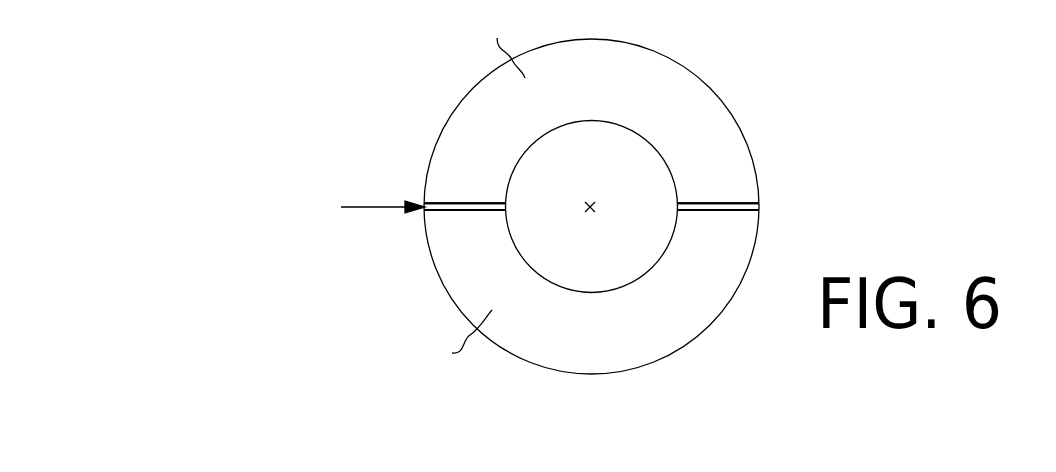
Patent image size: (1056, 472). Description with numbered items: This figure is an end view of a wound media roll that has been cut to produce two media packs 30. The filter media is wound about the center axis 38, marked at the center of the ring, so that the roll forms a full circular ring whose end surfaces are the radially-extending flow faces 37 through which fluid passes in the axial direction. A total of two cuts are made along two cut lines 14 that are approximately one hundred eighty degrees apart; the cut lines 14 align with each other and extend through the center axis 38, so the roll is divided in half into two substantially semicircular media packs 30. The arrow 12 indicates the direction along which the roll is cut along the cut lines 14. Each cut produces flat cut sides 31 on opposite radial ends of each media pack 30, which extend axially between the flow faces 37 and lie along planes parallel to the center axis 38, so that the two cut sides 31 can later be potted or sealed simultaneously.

The arrow 12 is at (372, 206).
The cut lines 14 is at (490, 203).
The media pack 30 is at (658, 51).
The cut sides 31 is at (455, 203).
The flow faces 37 is at (476, 187).
The center axis 38 is at (588, 206).